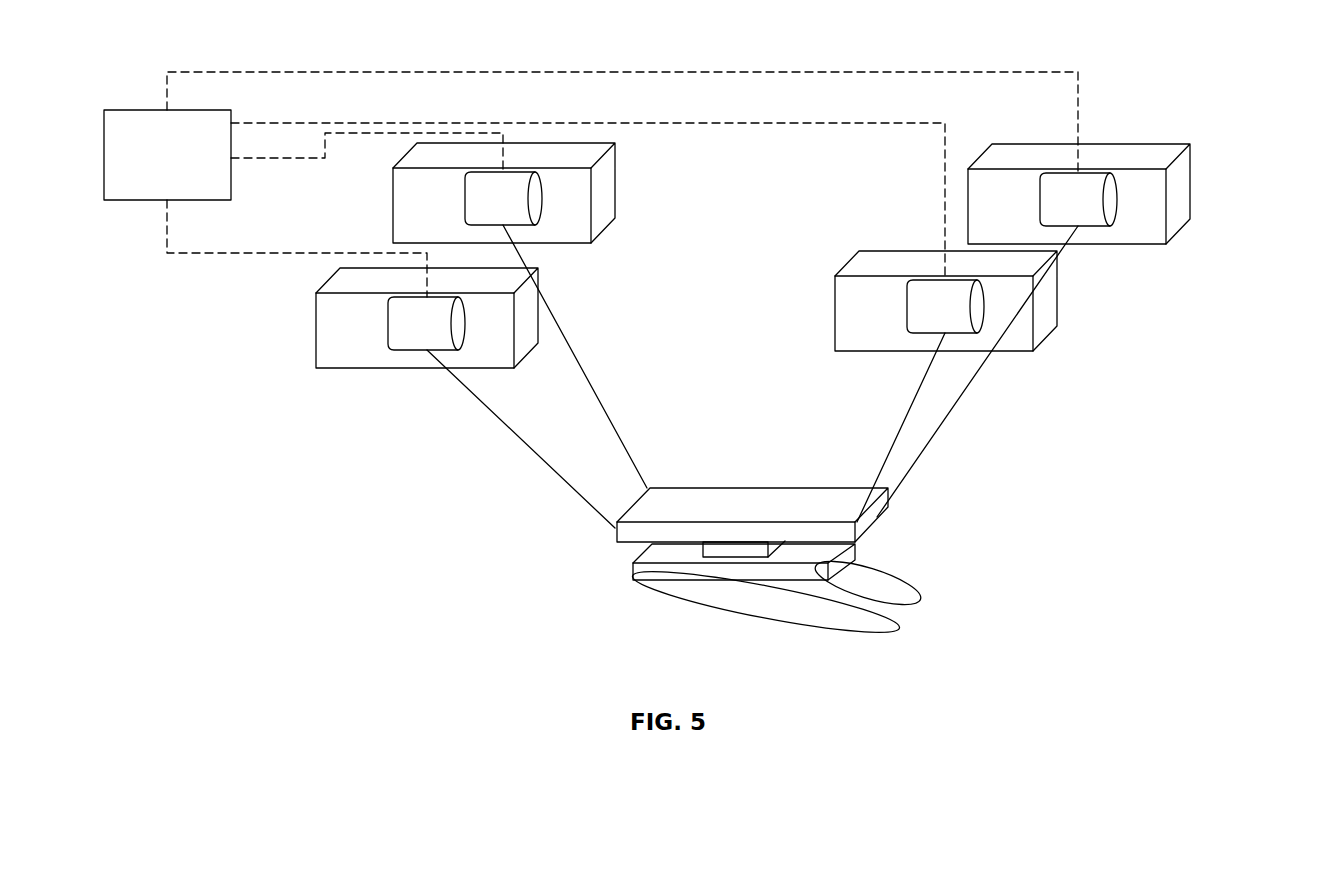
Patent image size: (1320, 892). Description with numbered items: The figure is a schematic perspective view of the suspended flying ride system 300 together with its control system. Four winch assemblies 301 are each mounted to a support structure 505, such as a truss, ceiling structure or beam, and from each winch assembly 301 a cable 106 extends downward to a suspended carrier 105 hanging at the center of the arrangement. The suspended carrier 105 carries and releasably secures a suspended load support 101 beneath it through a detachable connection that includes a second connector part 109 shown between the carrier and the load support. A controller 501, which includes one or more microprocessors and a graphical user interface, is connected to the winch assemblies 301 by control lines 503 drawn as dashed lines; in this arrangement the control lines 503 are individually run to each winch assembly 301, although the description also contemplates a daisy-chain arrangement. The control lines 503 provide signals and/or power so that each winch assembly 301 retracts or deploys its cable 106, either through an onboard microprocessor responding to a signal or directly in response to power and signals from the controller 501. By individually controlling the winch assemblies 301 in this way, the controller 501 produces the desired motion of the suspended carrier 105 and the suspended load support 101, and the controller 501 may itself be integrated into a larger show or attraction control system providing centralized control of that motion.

The controller 501 is at (189, 169).
The control lines 503 is at (592, 72).
The support structure 505 is at (615, 170).
The winch assembly 301 is at (515, 210).
The cable 106 is at (500, 418).
The suspended carrier 105 is at (880, 515).
The second connector part 109 is at (728, 553).
The suspended load support 101 is at (837, 562).
The flying ride system 300 is at (312, 477).